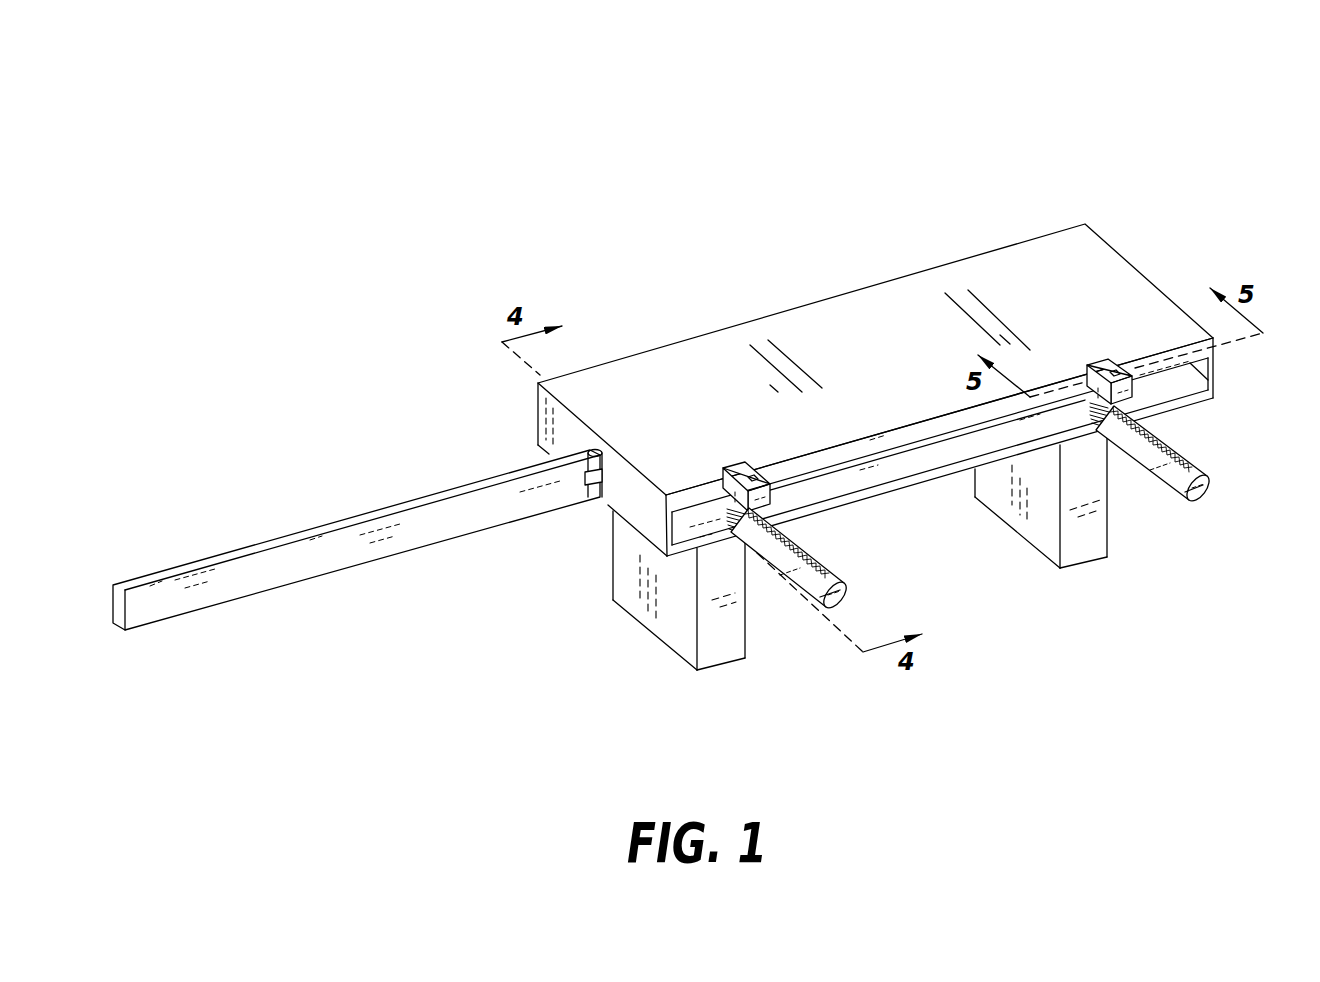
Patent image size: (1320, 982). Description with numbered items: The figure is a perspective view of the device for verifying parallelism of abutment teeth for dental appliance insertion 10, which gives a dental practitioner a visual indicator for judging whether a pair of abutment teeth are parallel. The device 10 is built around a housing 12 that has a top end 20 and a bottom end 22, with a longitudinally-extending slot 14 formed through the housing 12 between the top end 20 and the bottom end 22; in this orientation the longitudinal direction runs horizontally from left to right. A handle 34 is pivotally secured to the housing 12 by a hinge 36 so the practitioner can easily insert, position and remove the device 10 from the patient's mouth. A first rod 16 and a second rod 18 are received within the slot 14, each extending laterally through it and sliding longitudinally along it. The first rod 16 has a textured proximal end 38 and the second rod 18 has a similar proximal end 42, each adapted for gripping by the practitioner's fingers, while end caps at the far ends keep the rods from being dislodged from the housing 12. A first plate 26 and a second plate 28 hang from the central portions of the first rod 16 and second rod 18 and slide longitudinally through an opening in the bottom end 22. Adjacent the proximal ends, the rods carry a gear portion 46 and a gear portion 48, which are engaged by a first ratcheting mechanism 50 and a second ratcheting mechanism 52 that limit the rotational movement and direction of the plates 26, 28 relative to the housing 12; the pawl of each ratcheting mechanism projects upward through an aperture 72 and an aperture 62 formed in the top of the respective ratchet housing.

The device for verifying parallelism of abutment teeth for dental appliance insertio 10 is at (428, 125).
The housing 12 is at (884, 278).
The longitudinally-extending slot 14 is at (917, 476).
The first rod 16 is at (822, 558).
The second rod 18 is at (1170, 512).
The top end 20 is at (872, 364).
The bottom end 22 is at (1195, 410).
The first plate 26 is at (733, 655).
The second plate 28 is at (1092, 560).
The handle 34 is at (178, 556).
The hinge 36 is at (598, 496).
The proximal end 38 is at (844, 597).
The proximal end 42 is at (1207, 492).
The gear portion 46 is at (735, 535).
The gear portion 48 is at (1093, 425).
The first ratcheting mechanism 50 is at (745, 470).
The second ratcheting mechanism 52 is at (1090, 368).
The aperture 62 is at (1113, 358).
The aperture 72 is at (752, 468).